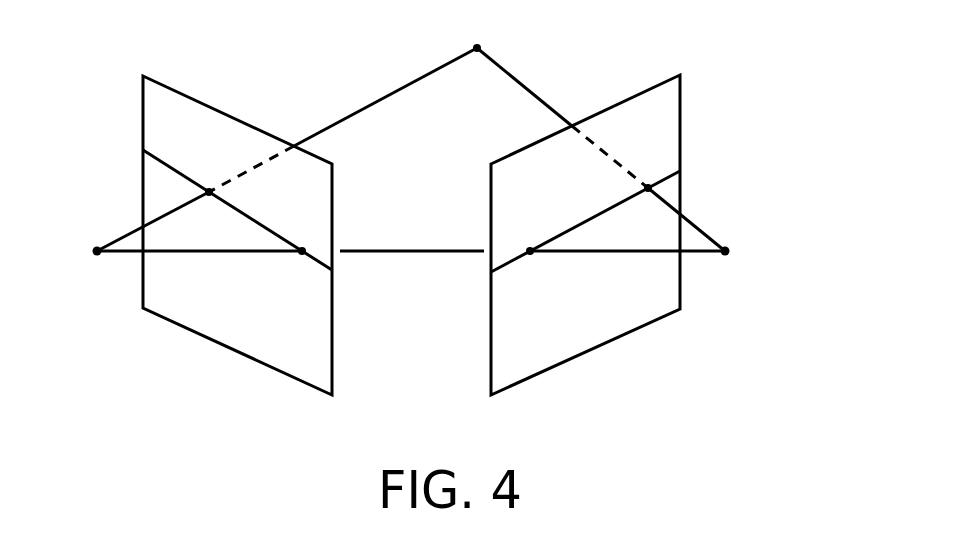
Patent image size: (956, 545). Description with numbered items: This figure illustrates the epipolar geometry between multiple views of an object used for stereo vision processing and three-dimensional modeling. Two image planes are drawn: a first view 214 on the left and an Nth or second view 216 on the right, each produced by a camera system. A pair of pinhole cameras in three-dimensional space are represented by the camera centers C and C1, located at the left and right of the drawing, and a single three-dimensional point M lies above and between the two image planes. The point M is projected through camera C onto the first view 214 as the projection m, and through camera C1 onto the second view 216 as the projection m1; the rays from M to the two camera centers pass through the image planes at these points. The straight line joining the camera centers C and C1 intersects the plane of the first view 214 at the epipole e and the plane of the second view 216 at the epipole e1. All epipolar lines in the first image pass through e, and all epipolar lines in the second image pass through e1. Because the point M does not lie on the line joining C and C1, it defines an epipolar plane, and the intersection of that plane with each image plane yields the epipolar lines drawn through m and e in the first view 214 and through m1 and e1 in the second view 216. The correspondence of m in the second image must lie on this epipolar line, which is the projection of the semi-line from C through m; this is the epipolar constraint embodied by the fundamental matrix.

The first view 214 is at (188, 290).
The Nth view 216 is at (585, 310).
The 3D point M is at (481, 32).
The pinhole camera C is at (86, 266).
The pinhole camera C1 is at (738, 266).
The projection m is at (208, 204).
The projection m1 is at (641, 203).
The epipole e is at (294, 264).
The epipole e1 is at (531, 264).